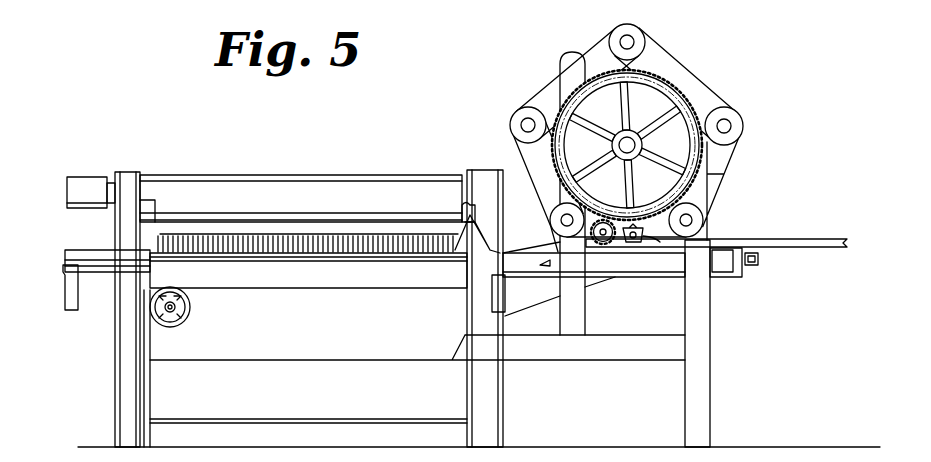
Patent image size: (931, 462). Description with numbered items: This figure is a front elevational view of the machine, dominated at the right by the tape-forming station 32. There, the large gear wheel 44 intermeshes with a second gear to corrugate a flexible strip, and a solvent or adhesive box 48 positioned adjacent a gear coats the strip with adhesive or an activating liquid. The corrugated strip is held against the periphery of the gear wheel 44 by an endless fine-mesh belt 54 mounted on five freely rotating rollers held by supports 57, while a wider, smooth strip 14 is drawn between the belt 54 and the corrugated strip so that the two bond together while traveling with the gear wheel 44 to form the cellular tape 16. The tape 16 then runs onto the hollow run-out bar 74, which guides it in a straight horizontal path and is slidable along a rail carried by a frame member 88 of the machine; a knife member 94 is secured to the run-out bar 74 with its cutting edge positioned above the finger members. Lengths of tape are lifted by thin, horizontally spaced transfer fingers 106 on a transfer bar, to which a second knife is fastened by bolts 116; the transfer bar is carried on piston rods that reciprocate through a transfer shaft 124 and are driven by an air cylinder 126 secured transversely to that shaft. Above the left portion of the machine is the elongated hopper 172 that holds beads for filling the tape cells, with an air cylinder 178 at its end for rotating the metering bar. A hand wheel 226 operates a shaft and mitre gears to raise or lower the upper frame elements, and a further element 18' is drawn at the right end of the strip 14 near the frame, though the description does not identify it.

The strip of relatively smooth flexible material 14 is at (803, 220).
The cellular tape 16 is at (540, 252).
The bracket 18' is at (768, 274).
The tape-forming station 32 is at (770, 145).
The gear wheel 44 is at (693, 92).
The solvent or adhesive box 48 is at (625, 247).
The endless fine-mesh belt 54 is at (745, 105).
The supports 57 is at (566, 52).
The run-out bar 74 is at (358, 262).
The frame member 88 is at (118, 362).
The knife member 94 is at (462, 252).
The transfer fingers 106 is at (332, 240).
The bolts 116 is at (455, 218).
The transfer shaft 124 is at (108, 273).
The air cylinder 126 is at (65, 306).
The hopper 172 is at (213, 176).
The air cylinder 178 is at (67, 194).
The hand wheel 226 is at (190, 312).